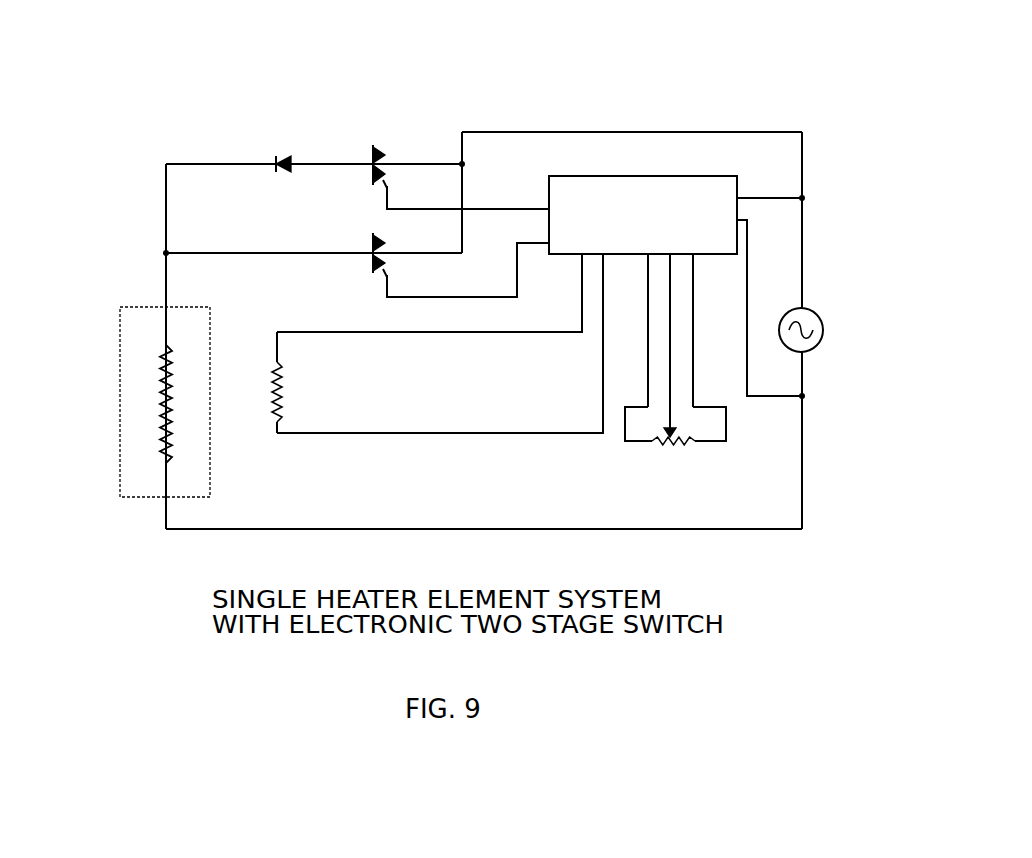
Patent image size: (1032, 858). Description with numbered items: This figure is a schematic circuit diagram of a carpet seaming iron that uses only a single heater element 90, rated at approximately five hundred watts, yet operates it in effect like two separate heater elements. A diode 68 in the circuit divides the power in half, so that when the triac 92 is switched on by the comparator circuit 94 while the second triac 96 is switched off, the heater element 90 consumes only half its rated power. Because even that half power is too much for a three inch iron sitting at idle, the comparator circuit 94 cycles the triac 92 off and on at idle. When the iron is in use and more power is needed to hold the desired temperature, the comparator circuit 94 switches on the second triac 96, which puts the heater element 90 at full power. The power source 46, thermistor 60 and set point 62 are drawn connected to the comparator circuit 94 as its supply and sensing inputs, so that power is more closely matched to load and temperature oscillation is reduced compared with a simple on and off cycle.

The diode 68 is at (270, 157).
The triac 92 is at (377, 140).
The second triac 96 is at (362, 281).
The comparator circuit 94 is at (655, 172).
The 115 VAC power source 46 is at (817, 312).
The thermistor 60 is at (268, 393).
The set point potentiometer 62 is at (668, 445).
The heater element 90 is at (154, 420).